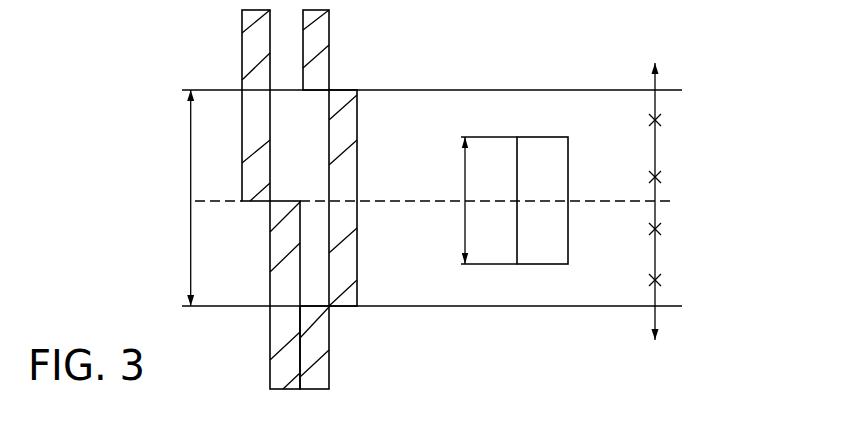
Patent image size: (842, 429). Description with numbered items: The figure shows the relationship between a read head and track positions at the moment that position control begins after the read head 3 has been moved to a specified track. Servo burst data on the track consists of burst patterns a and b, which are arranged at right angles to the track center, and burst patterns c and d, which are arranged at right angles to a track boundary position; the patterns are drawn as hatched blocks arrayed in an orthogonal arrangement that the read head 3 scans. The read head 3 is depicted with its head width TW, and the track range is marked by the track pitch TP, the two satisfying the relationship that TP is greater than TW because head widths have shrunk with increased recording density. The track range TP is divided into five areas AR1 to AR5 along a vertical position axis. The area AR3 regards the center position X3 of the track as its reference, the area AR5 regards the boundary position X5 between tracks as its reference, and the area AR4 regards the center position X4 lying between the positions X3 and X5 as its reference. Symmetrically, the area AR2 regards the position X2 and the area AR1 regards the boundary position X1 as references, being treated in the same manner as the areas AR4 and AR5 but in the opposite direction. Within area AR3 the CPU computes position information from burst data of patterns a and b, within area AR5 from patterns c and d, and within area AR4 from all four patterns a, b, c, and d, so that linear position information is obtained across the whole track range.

The read head 3 is at (541, 137).
The burst pattern a is at (256, 105).
The burst pattern b is at (285, 295).
The burst pattern c is at (314, 199).
The burst pattern d is at (343, 198).
The track pitch TP is at (175, 198).
The head width TW is at (467, 200).
The boundary position X1 is at (456, 307).
The position X2 is at (690, 249).
The center position X3 is at (462, 203).
The center position X4 is at (690, 160).
The boundary position X5 is at (456, 92).
The area AR1 is at (655, 320).
The area AR2 is at (655, 260).
The area AR3 is at (655, 190).
The area AR4 is at (655, 142).
The area AR5 is at (657, 82).